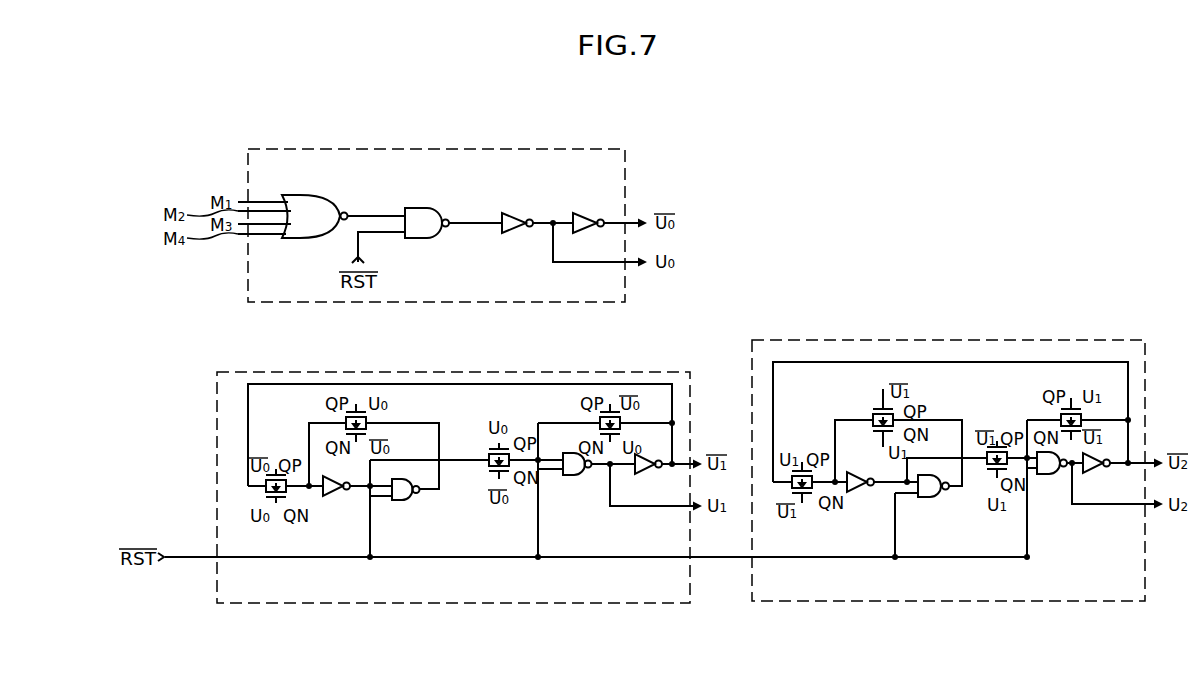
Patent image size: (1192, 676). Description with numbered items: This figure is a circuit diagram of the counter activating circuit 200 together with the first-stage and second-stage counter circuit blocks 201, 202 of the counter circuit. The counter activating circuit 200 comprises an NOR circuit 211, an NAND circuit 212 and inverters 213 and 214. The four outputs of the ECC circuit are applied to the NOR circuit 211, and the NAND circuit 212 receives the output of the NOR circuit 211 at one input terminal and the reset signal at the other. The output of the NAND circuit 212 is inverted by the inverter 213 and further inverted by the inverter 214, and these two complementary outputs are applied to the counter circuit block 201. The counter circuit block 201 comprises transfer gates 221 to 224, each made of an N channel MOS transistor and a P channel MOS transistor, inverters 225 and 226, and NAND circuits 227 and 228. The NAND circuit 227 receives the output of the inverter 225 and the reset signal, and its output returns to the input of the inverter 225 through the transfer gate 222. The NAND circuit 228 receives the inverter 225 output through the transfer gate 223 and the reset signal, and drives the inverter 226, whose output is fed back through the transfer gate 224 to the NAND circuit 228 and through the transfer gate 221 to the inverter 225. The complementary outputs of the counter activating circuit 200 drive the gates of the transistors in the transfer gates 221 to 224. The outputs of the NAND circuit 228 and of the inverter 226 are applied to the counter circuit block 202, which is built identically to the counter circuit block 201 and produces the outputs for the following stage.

The counter activating circuit 200 is at (461, 149).
The counter circuit block 201 is at (576, 604).
The counter circuit block 202 is at (853, 604).
The NOR circuit 211 is at (335, 198).
The NAND circuit 212 is at (428, 208).
The inverter 213 is at (512, 213).
The inverter 214 is at (583, 213).
The transfer gate 221 is at (255, 497).
The transfer gate 222 is at (342, 417).
The transfer gate 223 is at (485, 452).
The transfer gate 224 is at (596, 417).
The inverter 225 is at (334, 497).
The inverter 226 is at (646, 472).
The NAND circuit 227 is at (401, 502).
The NAND circuit 228 is at (570, 477).